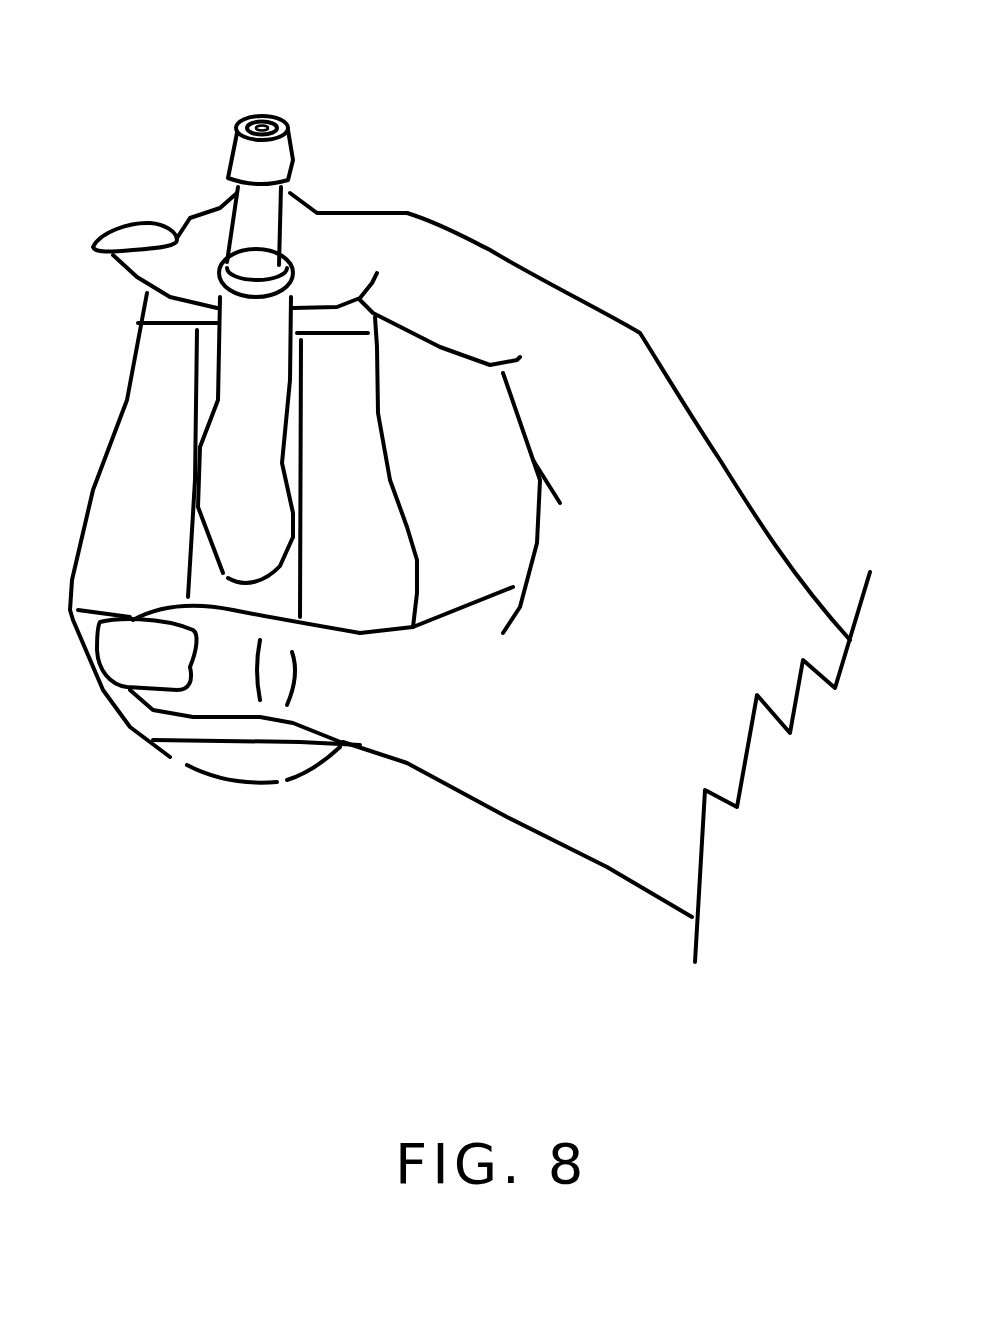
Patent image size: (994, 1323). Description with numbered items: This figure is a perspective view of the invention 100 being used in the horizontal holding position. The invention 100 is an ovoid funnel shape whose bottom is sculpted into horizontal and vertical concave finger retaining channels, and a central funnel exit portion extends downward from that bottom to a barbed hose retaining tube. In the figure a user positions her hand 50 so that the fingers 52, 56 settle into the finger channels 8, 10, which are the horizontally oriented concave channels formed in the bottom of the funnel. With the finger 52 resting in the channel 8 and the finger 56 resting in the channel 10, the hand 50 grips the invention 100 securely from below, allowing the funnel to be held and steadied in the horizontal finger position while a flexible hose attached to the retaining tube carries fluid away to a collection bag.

The invention 100 is at (177, 140).
The finger retaining channel 8 is at (155, 308).
The finger 52 is at (367, 237).
The hand 50 is at (743, 572).
The finger retaining channel 10 is at (140, 720).
The finger 56 is at (220, 690).